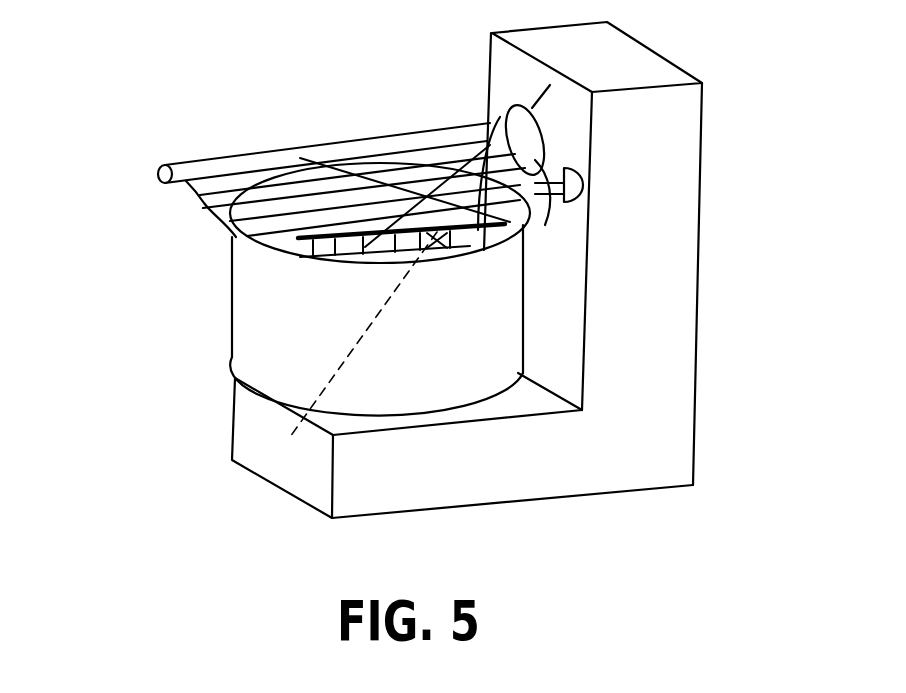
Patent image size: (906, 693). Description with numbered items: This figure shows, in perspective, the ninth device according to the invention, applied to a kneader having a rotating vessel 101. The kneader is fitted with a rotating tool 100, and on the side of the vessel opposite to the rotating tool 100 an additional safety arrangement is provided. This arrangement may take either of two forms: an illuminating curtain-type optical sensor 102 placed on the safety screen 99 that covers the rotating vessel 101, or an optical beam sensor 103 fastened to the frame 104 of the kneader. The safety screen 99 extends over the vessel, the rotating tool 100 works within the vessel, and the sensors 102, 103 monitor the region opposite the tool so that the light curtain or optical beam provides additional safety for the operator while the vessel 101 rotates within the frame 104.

The safety screen 99 is at (202, 203).
The rotating tool 100 is at (293, 153).
The rotating vessel 101 is at (232, 287).
The illuminating curtain-type optical sensor 102 is at (483, 253).
The optical beam sensor 103 is at (583, 193).
The frame 104 is at (678, 132).